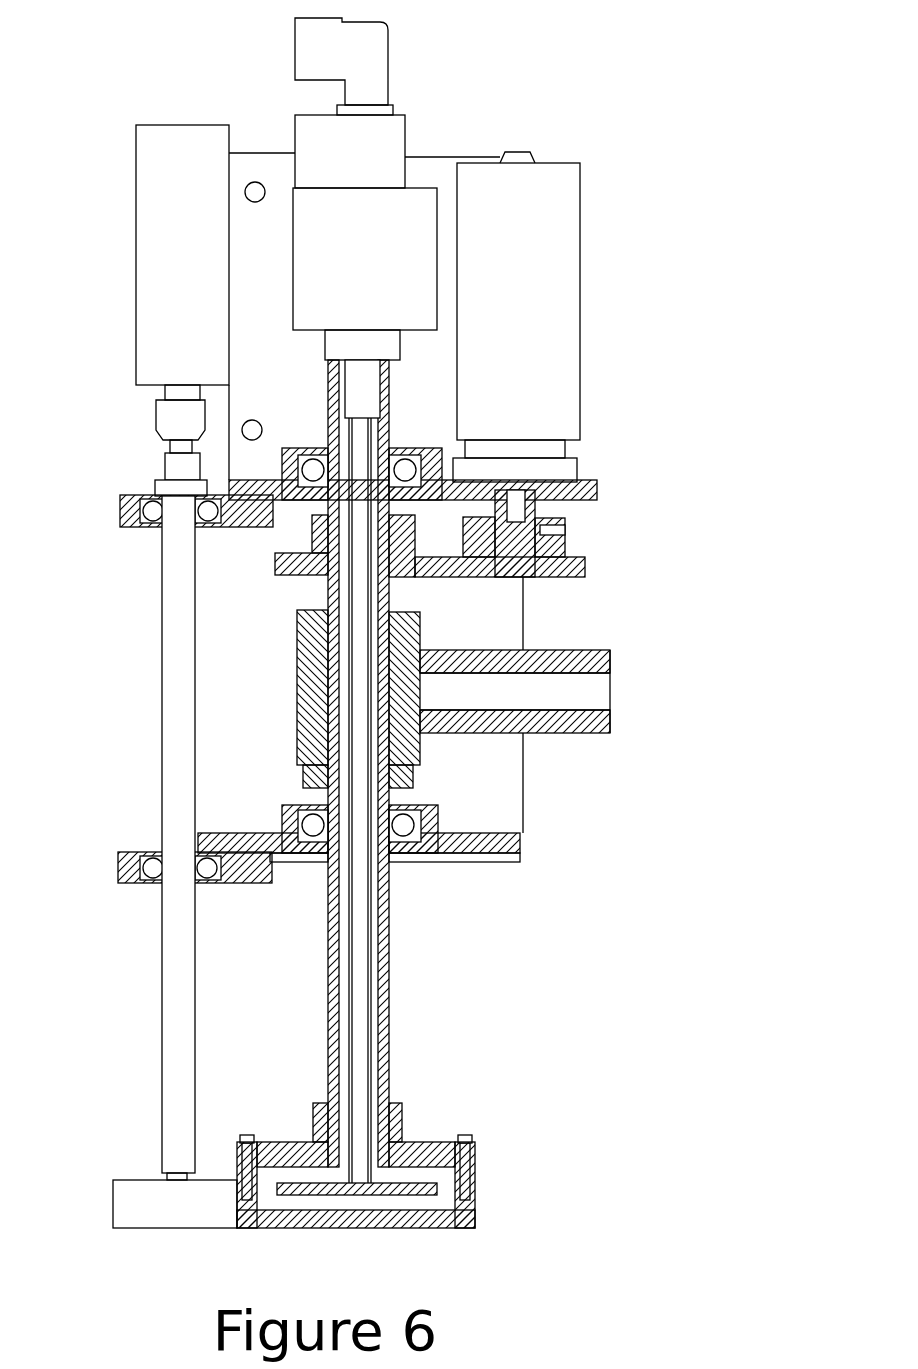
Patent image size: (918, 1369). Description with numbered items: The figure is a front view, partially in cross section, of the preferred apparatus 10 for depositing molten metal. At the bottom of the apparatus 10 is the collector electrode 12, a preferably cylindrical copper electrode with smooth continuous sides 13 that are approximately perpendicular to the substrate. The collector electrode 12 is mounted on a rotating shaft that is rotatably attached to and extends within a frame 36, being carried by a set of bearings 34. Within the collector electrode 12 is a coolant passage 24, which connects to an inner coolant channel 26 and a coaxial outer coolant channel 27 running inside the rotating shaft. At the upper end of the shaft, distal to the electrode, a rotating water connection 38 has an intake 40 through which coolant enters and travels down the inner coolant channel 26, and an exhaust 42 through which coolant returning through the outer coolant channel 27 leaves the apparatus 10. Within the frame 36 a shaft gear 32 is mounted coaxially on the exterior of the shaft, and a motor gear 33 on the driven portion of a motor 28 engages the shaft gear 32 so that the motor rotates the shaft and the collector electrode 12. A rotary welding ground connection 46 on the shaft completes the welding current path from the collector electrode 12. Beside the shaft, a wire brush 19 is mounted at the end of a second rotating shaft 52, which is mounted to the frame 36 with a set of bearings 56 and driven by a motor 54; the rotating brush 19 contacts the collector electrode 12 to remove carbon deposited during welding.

The apparatus 10 is at (786, 146).
The collector electrode 12 is at (433, 1142).
The smooth continuous sides 13 is at (483, 1190).
The wire brush 19 is at (150, 1217).
The coolant passage 24 is at (385, 1205).
The inner coolant channel 26 is at (362, 1050).
The outer coolant channel 27 is at (334, 992).
The motor 28 is at (565, 322).
The shaft gear 32 is at (418, 568).
The motor gear 33 is at (588, 566).
The bearings 34 is at (418, 862).
The frame 36 is at (507, 817).
The rotating water connection 38 is at (415, 205).
The intake 40 is at (313, 45).
The exhaust 42 is at (305, 138).
The rotary welding ground connection 46 is at (563, 733).
The rotating shaft 52 is at (178, 1045).
The motor 54 is at (155, 232).
The bearings 56 is at (145, 522).